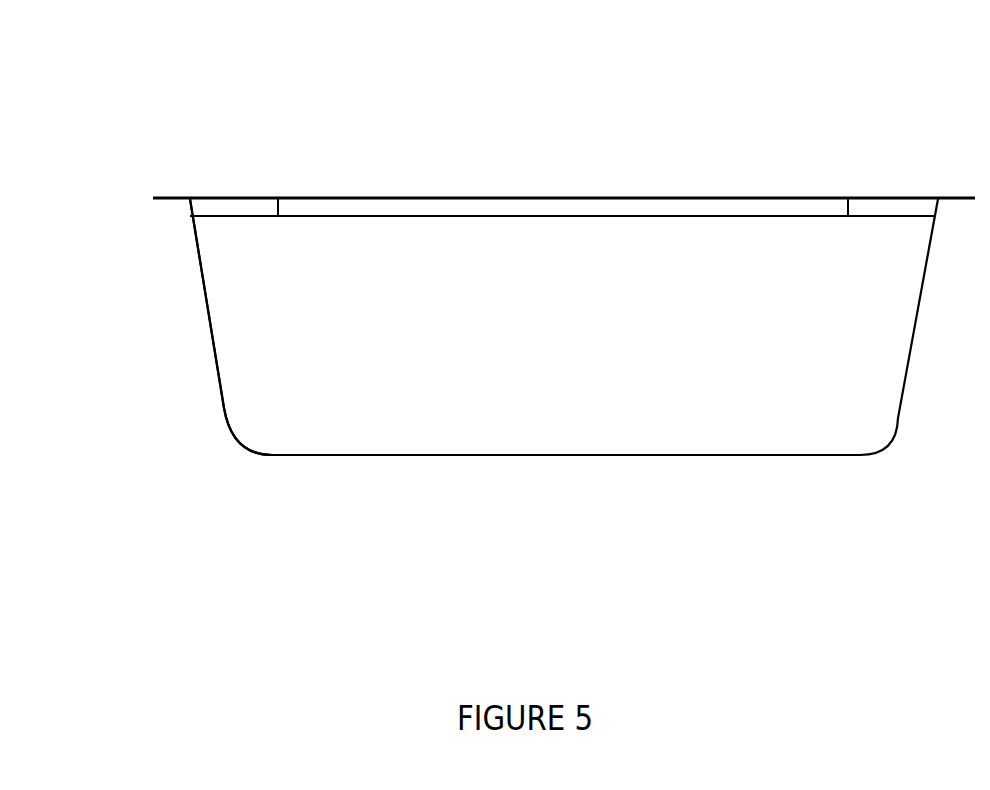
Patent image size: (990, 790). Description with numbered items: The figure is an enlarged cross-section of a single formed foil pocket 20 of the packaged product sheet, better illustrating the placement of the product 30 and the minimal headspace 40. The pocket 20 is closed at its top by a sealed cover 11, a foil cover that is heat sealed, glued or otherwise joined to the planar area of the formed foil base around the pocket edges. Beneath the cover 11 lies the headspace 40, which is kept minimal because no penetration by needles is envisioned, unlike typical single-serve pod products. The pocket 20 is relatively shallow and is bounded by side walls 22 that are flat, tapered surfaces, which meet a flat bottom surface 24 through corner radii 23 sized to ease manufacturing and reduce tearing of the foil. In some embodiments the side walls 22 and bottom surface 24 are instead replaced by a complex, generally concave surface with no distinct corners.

The sealed cover 11 is at (178, 195).
The headspace 40 is at (447, 212).
The formed foil pocket 20 is at (510, 435).
The side wall 22 is at (203, 297).
The corner radius 23 is at (243, 449).
The bottom surface 24 is at (548, 460).
The product 30 is at (708, 387).